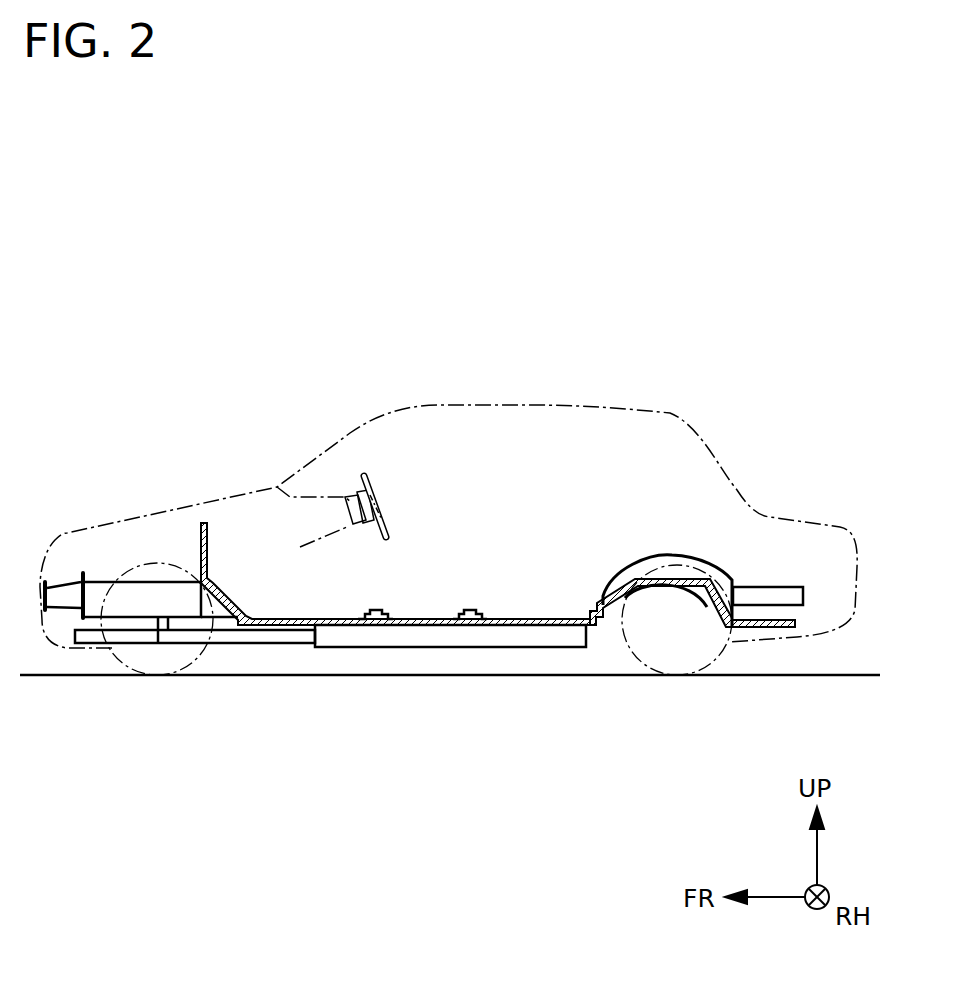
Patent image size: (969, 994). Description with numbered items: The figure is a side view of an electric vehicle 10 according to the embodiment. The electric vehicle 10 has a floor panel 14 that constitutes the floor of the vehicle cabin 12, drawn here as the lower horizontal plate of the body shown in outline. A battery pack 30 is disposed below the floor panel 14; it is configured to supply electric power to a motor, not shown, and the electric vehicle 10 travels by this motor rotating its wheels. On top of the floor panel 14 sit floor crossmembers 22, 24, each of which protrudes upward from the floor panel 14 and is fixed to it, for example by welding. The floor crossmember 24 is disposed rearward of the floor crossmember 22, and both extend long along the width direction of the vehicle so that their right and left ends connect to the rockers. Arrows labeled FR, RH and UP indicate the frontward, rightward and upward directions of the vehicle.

The electric vehicle 10 is at (177, 303).
The vehicle cabin 12 is at (627, 450).
The floor panel 14 is at (418, 622).
The floor crossmember 22 is at (375, 610).
The floor crossmember 24 is at (467, 610).
The battery pack 30 is at (442, 637).